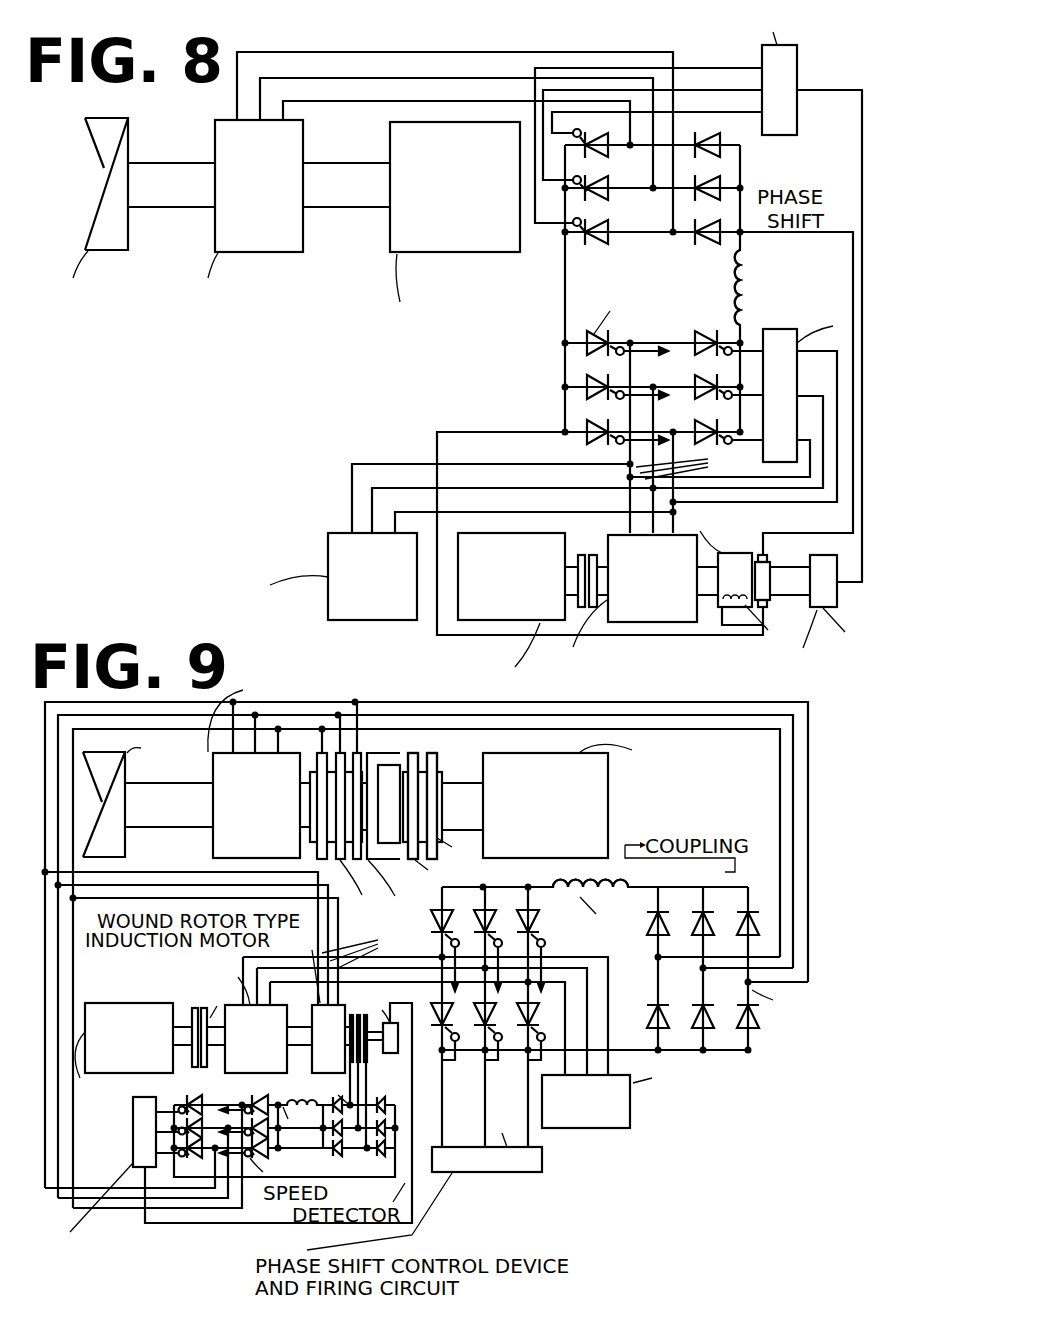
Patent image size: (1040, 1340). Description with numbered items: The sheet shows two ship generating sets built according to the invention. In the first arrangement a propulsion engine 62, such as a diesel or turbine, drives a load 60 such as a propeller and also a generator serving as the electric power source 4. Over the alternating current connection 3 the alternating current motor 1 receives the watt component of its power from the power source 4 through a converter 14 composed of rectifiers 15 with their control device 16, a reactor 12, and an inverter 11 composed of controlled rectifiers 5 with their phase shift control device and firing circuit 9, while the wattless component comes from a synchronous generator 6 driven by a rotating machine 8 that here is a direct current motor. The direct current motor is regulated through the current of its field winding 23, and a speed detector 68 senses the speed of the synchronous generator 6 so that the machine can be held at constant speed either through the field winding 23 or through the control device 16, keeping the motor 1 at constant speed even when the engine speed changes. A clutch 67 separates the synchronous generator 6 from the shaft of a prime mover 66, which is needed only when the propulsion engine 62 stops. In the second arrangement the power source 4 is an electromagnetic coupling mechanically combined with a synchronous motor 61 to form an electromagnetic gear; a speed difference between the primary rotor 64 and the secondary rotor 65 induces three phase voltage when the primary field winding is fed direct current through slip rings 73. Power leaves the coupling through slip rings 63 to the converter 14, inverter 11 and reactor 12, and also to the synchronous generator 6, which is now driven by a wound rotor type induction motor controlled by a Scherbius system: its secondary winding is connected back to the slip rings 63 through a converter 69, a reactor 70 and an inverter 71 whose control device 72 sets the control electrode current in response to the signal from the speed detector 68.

In FIG. 8, the alternating current motor 1 is at (281, 571).
In FIG. 9, the alternating current motor 1 is at (665, 1097).
In FIG. 8, the alternating current connection 3 is at (680, 464).
In FIG. 9, the alternating current connection 3 is at (355, 966).
In FIG. 8, the electric power source 4 is at (269, 242).
In FIG. 9, the electric power source 4 is at (356, 824).
In FIG. 8, the controlled rectifiers 5 is at (627, 367).
In FIG. 8, the synchronous generator 6 is at (652, 613).
In FIG. 9, the synchronous generator 6 is at (183, 1015).
In FIG. 8, the rotating machine 8 is at (746, 559).
In FIG. 9, the rotating machine 8 is at (328, 1039).
In FIG. 8, the phase shift control device and firing circuit 9 is at (799, 347).
In FIG. 9, the phase shift control device and firing circuit 9 is at (487, 1142).
In FIG. 8, the inverter 11 is at (713, 377).
In FIG. 9, the inverter 11 is at (503, 985).
In FIG. 8, the reactor 12 is at (720, 287).
In FIG. 9, the reactor 12 is at (581, 897).
In FIG. 8, the converter 14 is at (688, 203).
In FIG. 9, the converter 14 is at (724, 968).
In FIG. 8, the rectifiers 15 is at (592, 201).
In FIG. 8, the control device 16 is at (682, 72).
In FIG. 8, the field winding 23 is at (771, 606).
In FIG. 8, the load 60 is at (89, 214).
In FIG. 9, the load 60 is at (140, 803).
In FIG. 9, the synchronous motor 61 is at (345, 769).
In FIG. 8, the propulsion engine 62 is at (459, 241).
In FIG. 9, the propulsion engine 62 is at (617, 801).
In FIG. 9, the slip rings 63 is at (370, 838).
In FIG. 9, the primary rotor 64 is at (453, 806).
In FIG. 9, the secondary rotor 65 is at (405, 839).
In FIG. 8, the prime mover 66 is at (456, 605).
In FIG. 9, the prime mover 66 is at (150, 1052).
In FIG. 8, the clutch 67 is at (586, 566).
In FIG. 9, the clutch 67 is at (213, 1025).
In FIG. 8, the speed detector 68 is at (827, 628).
In FIG. 9, the speed detector 68 is at (379, 1020).
In FIG. 9, the converter 69 is at (339, 1059).
In FIG. 9, the reactor 70 is at (282, 1126).
In FIG. 9, the inverter 71 is at (260, 1136).
In FIG. 9, the control device 72 is at (112, 1188).
In FIG. 9, the slip rings 73 is at (429, 823).